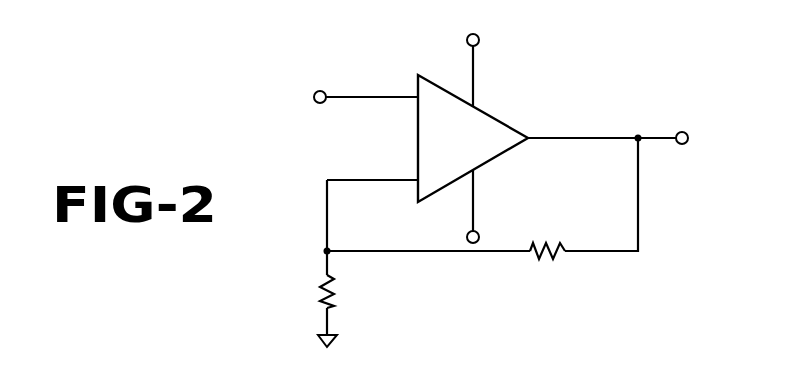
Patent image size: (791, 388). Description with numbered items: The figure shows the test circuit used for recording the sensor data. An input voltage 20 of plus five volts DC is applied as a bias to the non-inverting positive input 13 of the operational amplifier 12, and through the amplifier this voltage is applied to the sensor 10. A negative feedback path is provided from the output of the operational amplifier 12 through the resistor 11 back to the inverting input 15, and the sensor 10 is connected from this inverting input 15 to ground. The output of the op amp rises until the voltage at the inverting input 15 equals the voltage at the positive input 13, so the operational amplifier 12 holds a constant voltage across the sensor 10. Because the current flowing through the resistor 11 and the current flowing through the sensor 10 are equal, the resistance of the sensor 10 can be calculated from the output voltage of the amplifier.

The sensor 10 is at (320, 282).
The resistor 11 is at (550, 257).
The operational amplifier 12 is at (497, 120).
The non-inverting positive input 13 is at (415, 97).
The inverting input 15 is at (415, 180).
The input voltage 20 is at (345, 95).